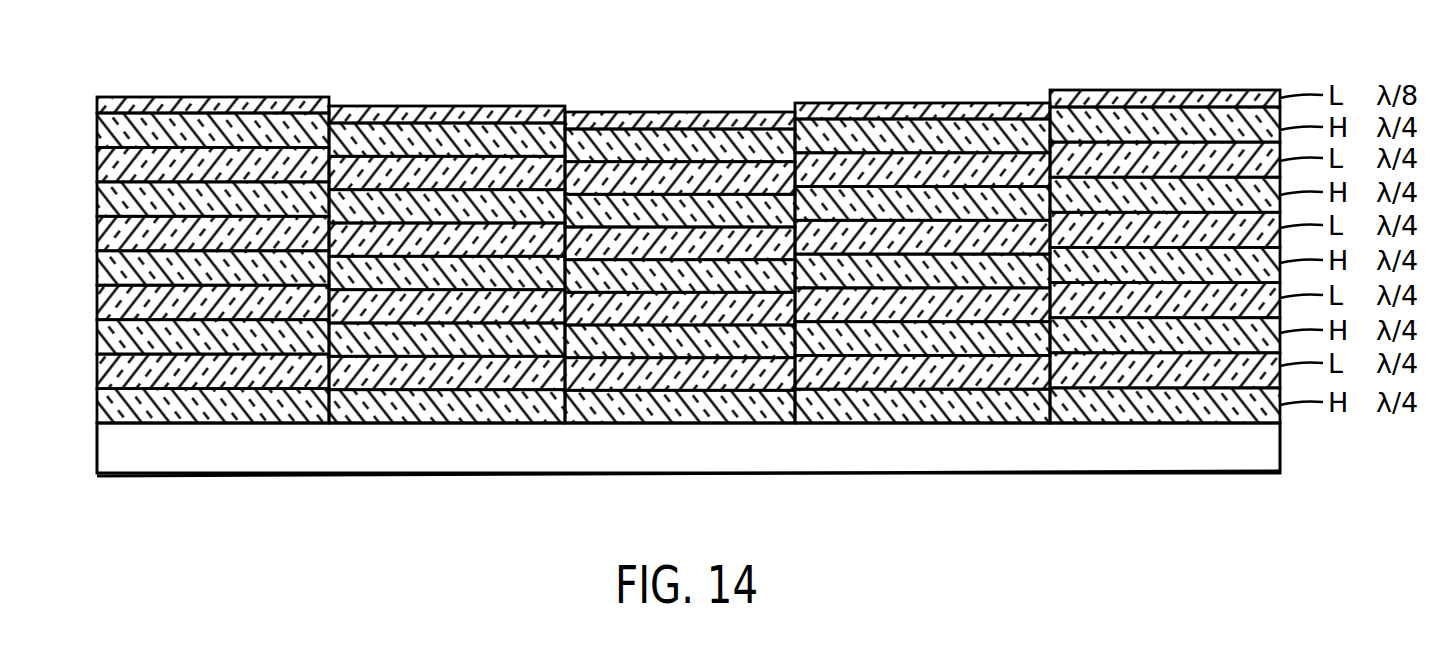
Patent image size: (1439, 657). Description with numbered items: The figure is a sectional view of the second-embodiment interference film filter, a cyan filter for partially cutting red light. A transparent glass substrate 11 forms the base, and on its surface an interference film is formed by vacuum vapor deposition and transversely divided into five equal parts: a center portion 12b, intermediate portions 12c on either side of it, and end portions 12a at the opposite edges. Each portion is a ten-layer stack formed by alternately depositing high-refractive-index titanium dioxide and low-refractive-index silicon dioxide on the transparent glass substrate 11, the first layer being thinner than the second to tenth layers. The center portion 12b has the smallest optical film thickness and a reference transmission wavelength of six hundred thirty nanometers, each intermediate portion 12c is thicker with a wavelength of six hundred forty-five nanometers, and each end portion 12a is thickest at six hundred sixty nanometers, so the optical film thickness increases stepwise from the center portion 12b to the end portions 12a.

The transparent glass substrate 11 is at (797, 447).
The end portion 12a is at (250, 90).
The center portion 12b is at (635, 105).
The intermediate portion 12c is at (390, 98).